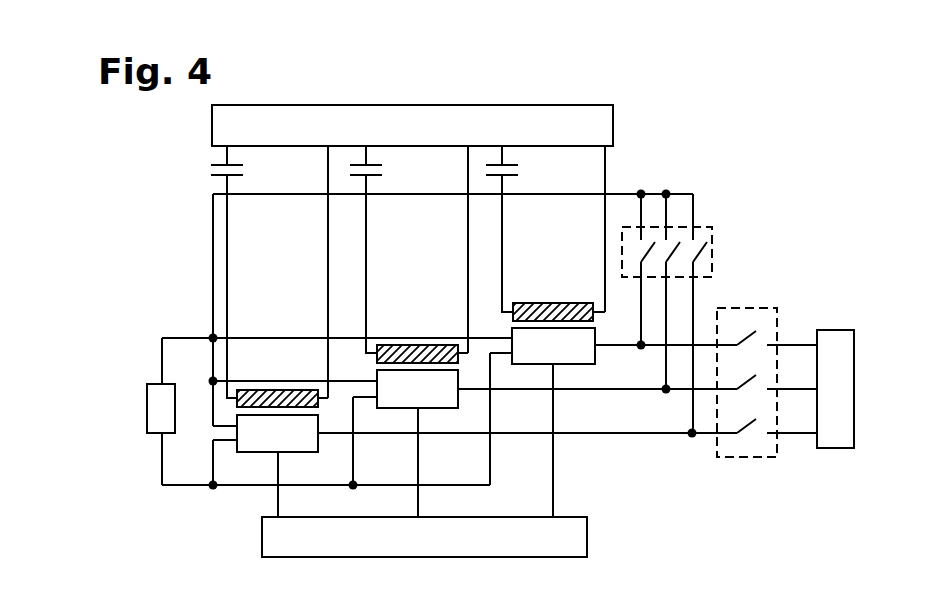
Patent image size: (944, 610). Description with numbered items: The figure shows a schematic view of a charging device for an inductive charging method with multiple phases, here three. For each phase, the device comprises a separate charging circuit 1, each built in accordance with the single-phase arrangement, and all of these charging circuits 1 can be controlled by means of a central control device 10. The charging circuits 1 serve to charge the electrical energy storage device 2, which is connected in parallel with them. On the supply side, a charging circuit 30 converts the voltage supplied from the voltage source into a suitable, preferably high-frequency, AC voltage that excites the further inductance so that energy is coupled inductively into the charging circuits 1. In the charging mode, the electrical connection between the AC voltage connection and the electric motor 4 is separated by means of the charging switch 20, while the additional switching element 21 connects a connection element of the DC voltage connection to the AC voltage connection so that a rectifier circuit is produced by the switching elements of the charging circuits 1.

The charging circuit 1 is at (416, 377).
The electrical energy storage device 2 is at (147, 406).
The electric motor 4 is at (838, 448).
The central control device 10 is at (587, 540).
The charging switch 20 is at (754, 457).
The additional switching element 21 is at (712, 258).
The charging circuit 30 is at (412, 149).